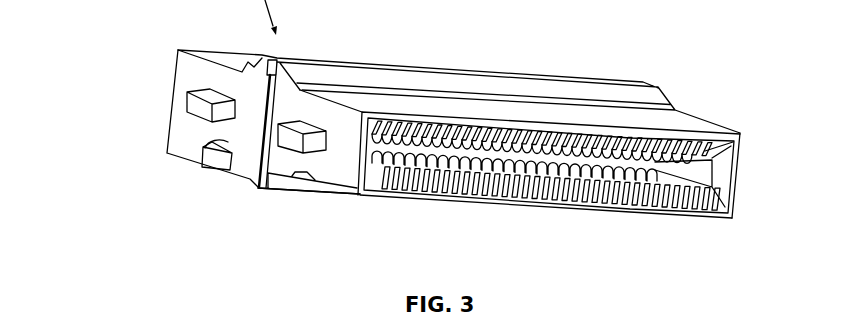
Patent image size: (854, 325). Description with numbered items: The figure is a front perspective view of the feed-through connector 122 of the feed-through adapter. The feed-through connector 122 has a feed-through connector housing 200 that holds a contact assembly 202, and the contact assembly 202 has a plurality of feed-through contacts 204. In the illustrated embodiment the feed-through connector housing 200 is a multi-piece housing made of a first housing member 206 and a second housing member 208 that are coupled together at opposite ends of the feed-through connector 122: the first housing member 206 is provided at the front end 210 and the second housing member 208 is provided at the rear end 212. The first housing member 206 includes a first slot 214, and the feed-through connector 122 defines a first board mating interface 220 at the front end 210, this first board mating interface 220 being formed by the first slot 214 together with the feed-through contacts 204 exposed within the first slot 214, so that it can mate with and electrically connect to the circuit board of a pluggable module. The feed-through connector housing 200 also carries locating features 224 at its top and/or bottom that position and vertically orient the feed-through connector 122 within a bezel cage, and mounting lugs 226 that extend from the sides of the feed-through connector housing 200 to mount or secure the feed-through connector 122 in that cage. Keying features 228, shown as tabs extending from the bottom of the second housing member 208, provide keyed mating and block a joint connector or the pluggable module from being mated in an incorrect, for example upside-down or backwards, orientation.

The feed-through connector 122 is at (569, 44).
The feed-through connector housing 200 is at (213, 324).
The contact assembly 202 is at (551, 162).
The feed-through contacts 204 is at (596, 160).
The first housing member 206 is at (327, 173).
The second housing member 208 is at (201, 163).
The front end 210 is at (377, 192).
The rear end 212 is at (173, 97).
The first slot 214 is at (450, 176).
The first board mating interface 220 is at (718, 170).
The locating features 224 is at (259, 56).
The mounting lugs 226 is at (187, 113).
The keying features 228 is at (212, 161).